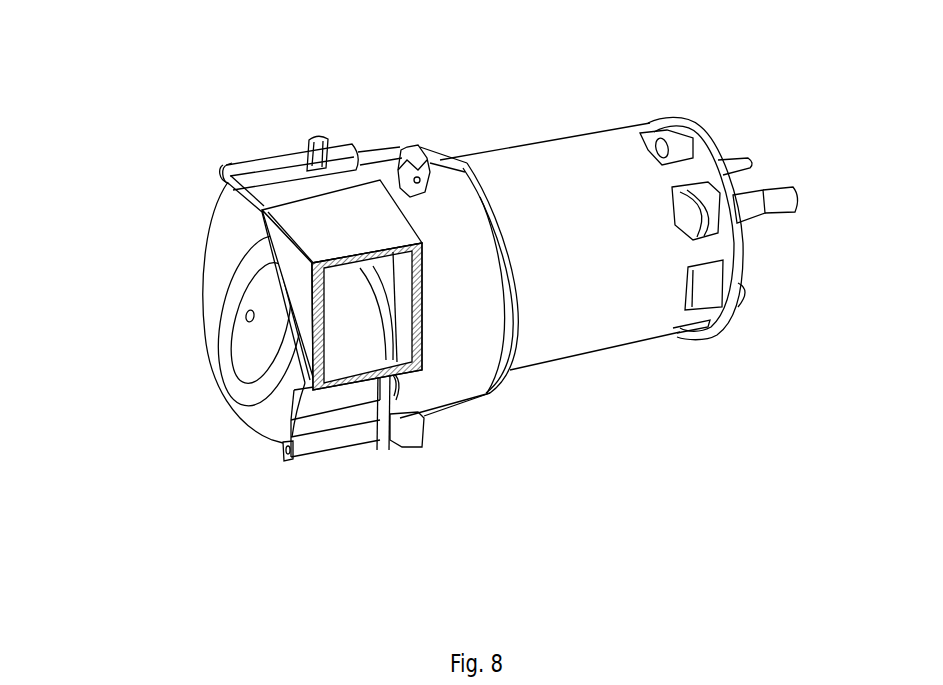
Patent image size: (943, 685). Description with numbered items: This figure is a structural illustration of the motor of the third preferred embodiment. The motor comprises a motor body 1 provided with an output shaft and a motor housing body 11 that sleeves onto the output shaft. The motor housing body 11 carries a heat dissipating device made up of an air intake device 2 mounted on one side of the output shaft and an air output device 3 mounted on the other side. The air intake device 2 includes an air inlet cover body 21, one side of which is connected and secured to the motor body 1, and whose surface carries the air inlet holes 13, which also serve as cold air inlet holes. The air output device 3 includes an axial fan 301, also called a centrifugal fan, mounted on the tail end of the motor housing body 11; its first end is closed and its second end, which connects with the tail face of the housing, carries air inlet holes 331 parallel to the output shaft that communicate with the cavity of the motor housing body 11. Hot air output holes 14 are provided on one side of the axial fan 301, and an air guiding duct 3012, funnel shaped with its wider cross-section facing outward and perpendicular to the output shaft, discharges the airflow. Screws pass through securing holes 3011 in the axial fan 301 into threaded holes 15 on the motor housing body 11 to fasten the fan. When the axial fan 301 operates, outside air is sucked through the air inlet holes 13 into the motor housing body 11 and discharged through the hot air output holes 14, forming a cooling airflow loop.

The motor body 1 is at (599, 219).
The motor housing body 11 is at (558, 138).
The air inlet hole 13 is at (650, 128).
The air intake device 2 is at (712, 180).
The air inlet cover body 21 is at (690, 128).
The air output device 3 is at (278, 315).
The axial fan 301 is at (192, 294).
The securing hole 3011 is at (282, 452).
The air guiding duct 3012 is at (305, 382).
The air inlet holes 331 is at (360, 302).
The hot air output hole 14 is at (373, 364).
The threaded hole 15 is at (347, 140).